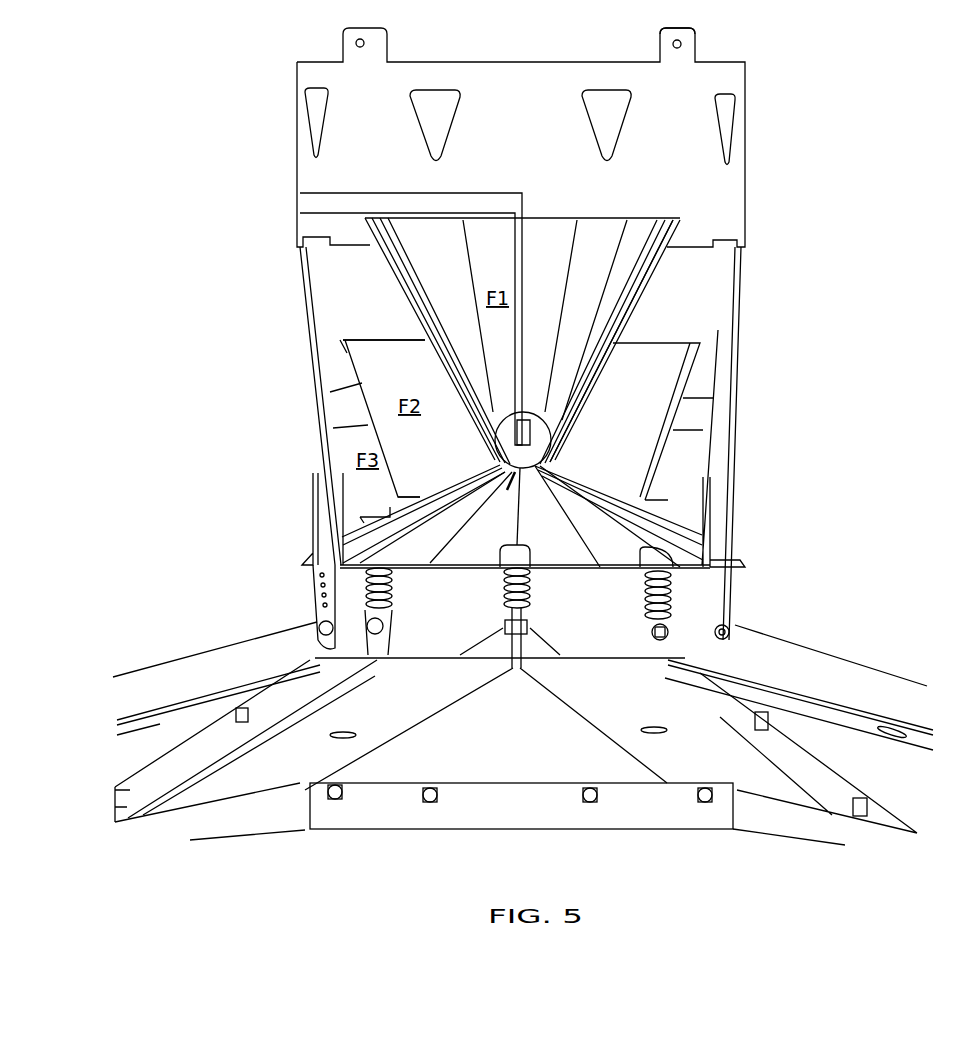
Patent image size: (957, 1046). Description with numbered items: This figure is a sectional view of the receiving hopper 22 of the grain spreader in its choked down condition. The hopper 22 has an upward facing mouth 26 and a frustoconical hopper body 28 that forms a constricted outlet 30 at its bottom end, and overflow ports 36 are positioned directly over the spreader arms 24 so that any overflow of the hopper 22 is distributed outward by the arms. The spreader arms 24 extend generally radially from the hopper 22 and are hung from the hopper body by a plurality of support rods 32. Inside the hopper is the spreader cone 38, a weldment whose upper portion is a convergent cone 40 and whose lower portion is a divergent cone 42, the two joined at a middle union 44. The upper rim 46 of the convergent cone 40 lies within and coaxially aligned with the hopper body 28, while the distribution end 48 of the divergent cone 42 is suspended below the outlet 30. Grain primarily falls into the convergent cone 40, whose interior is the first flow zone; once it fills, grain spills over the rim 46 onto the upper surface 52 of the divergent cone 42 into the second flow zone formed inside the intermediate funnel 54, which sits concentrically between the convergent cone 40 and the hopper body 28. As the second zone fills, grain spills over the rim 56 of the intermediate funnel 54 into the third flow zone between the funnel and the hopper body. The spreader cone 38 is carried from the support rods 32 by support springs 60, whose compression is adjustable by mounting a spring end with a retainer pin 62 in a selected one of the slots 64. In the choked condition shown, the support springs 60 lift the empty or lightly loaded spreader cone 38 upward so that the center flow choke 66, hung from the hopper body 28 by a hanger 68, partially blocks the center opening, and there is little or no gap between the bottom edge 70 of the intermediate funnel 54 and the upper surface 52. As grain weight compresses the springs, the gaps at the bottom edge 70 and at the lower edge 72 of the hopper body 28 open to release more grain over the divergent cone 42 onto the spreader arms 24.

The hopper 22 is at (748, 170).
The spreader arms 24 is at (162, 660).
The upward facing mouth 26 is at (602, 48).
The frustoconical hopper body 28 is at (735, 318).
The constricted outlet 30 is at (693, 540).
The support rods 32 is at (300, 438).
The overflow ports 36 is at (622, 130).
The spreader cone 38 is at (590, 400).
The convergent cone 40 is at (613, 357).
The divergent cone 42 is at (647, 510).
The middle union 44 is at (600, 457).
The upper rim 46 is at (605, 220).
The distribution end 48 is at (745, 567).
The upper surface 52 is at (545, 525).
The intermediate funnel 54 is at (360, 378).
The rim 56 is at (385, 338).
The support springs 60 is at (530, 596).
The retainer pin 62 is at (655, 612).
The slots 64 is at (718, 614).
The center flow choke 66 is at (500, 500).
The hanger 68 is at (452, 193).
The bottom edge 70 is at (410, 492).
The lower edge 72 is at (360, 517).